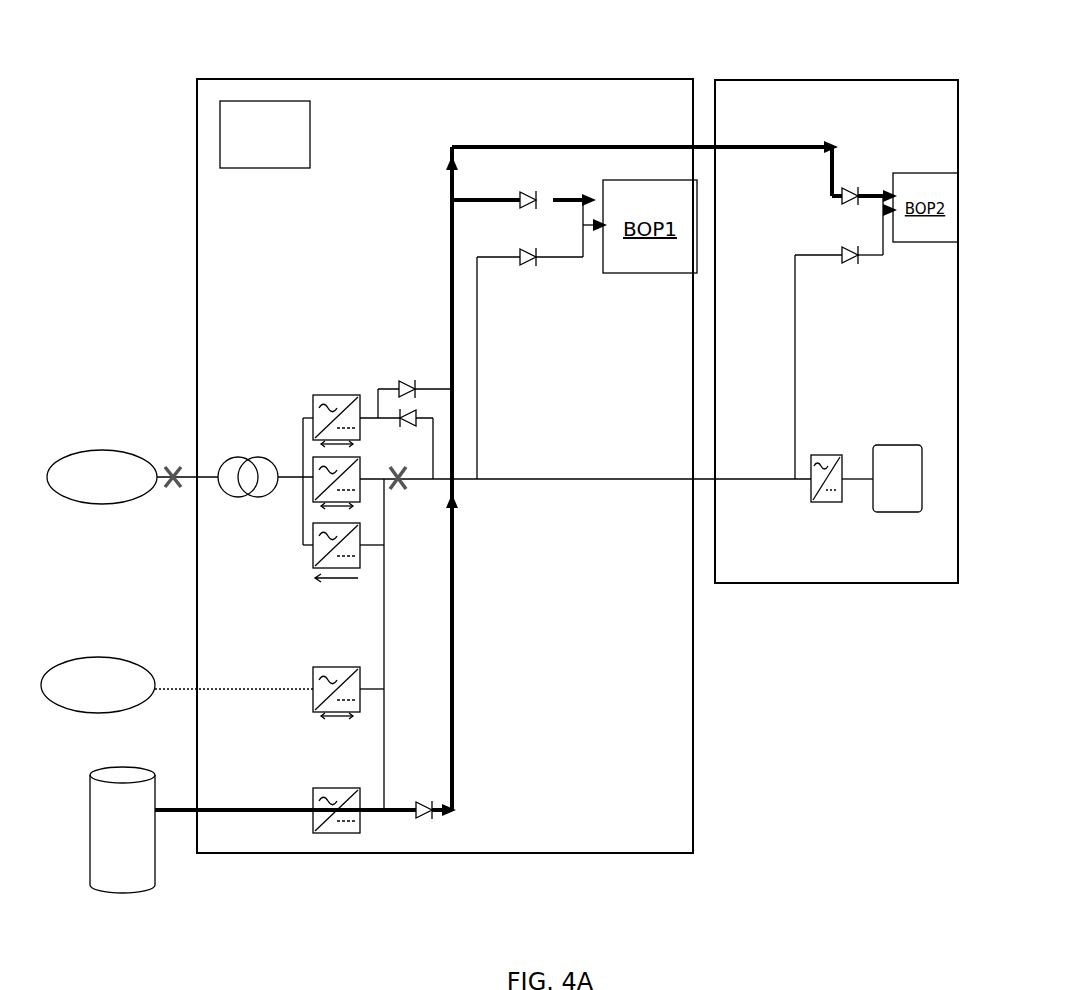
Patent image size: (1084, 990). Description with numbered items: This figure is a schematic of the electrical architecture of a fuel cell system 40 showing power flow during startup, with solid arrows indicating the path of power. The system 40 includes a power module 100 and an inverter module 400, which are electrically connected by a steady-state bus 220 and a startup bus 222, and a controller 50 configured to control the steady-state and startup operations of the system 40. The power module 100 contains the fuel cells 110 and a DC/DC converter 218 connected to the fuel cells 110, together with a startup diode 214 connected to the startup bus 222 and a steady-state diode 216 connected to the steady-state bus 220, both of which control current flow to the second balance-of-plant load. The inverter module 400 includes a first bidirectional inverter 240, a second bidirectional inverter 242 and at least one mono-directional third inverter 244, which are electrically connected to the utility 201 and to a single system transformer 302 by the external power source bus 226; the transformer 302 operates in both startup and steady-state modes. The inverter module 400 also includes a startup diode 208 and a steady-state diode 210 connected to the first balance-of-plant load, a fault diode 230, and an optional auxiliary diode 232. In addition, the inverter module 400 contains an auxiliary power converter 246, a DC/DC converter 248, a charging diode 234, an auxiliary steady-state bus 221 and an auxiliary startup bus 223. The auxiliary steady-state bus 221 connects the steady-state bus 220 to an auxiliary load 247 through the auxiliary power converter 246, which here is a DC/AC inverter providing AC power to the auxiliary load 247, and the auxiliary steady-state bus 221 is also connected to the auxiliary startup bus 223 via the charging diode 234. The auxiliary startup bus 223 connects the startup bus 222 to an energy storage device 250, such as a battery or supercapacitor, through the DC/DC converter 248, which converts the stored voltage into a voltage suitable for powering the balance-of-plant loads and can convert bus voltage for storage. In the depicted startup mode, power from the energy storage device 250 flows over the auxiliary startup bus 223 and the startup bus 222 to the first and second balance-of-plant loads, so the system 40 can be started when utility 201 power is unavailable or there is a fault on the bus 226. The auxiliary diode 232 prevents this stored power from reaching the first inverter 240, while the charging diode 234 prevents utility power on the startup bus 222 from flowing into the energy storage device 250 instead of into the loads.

The inverter module 400 is at (440, 78).
The power module 100 is at (838, 78).
The fuel cell system 40 is at (577, 492).
The controller 50 is at (265, 134).
The utility 201 is at (104, 447).
The external power source bus 226 is at (200, 480).
The system transformer 302 is at (222, 490).
The first bidirectional inverter 240 is at (313, 400).
The second bidirectional inverter 242 is at (310, 477).
The mono-directional third inverter 244 is at (318, 570).
The auxiliary power converter 246 is at (318, 705).
The DC/DC converter 248 is at (318, 830).
The DC/DC converter 218 is at (827, 504).
The auxiliary steady-state bus 221 is at (383, 572).
The steady-state bus 220 is at (633, 479).
The auxiliary diode 232 is at (405, 387).
The fault diode 230 is at (404, 420).
The auxiliary startup bus 223 is at (453, 623).
The startup bus 222 is at (590, 145).
The startup diode 208 is at (523, 182).
The steady-state diode 210 is at (530, 280).
The startup diode 214 is at (848, 183).
The steady-state diode 216 is at (845, 265).
The fuel cells 110 is at (892, 515).
The auxiliary load 247 is at (104, 657).
The energy storage device 250 is at (253, 830).
The charging diode 234 is at (423, 815).